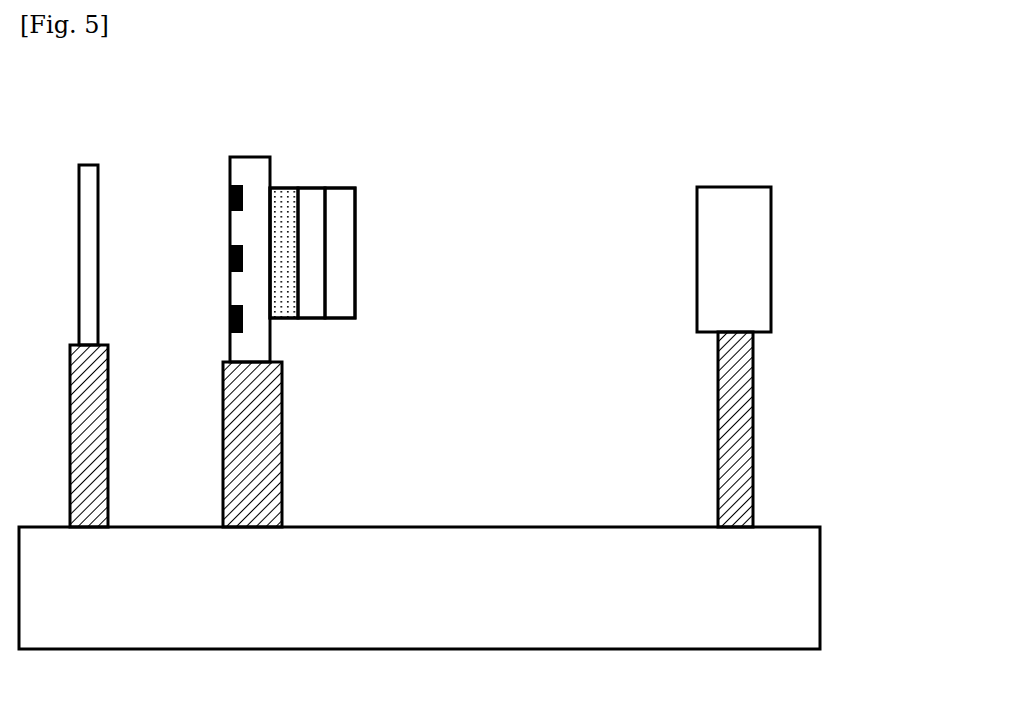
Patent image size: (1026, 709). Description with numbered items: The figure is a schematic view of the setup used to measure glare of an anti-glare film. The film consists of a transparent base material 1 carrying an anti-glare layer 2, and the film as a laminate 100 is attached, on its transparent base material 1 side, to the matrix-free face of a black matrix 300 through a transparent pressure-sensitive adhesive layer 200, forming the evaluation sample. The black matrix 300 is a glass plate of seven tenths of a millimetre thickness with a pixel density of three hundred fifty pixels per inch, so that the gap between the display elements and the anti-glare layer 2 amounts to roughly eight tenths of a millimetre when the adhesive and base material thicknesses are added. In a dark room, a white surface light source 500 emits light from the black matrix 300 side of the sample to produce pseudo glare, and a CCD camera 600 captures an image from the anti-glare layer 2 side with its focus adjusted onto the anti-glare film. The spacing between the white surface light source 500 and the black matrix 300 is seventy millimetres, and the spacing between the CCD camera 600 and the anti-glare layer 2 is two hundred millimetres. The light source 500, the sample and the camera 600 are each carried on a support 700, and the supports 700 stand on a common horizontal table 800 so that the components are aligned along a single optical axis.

The transparent base material 1 is at (310, 208).
The anti-glare layer 2 is at (342, 228).
The laminate 100 is at (392, 261).
The transparent pressure-sensitive adhesive layer 200 is at (285, 308).
The black matrix 300 is at (245, 168).
The white surface light source 500 is at (92, 172).
The CCD camera 600 is at (741, 200).
The support 700 is at (108, 445).
The horizontal table 800 is at (800, 598).